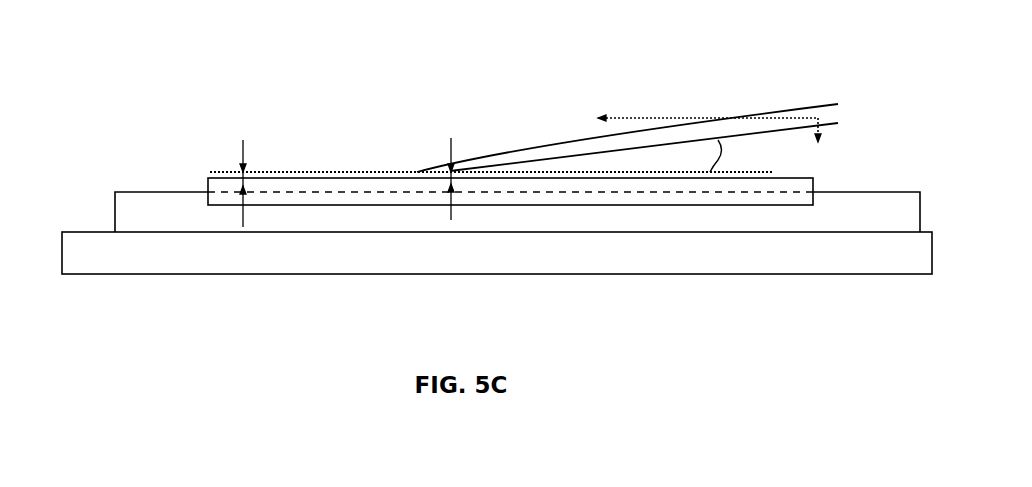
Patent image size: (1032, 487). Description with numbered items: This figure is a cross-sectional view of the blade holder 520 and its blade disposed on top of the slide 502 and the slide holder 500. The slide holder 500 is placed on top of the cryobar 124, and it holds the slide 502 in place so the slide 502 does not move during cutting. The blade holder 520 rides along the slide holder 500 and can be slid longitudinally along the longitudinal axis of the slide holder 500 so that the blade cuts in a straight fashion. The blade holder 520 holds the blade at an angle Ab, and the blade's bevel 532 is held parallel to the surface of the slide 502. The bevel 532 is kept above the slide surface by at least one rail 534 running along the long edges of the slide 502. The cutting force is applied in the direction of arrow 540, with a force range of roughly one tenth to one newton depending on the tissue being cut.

The cryobar 124 is at (217, 275).
The slide holder 500 is at (165, 220).
The slide 502 is at (568, 178).
The blade holder 520 is at (587, 140).
The bevel 532 is at (449, 165).
The rail 534 is at (235, 169).
The arrow 540 is at (640, 115).
The angle Ab is at (722, 152).